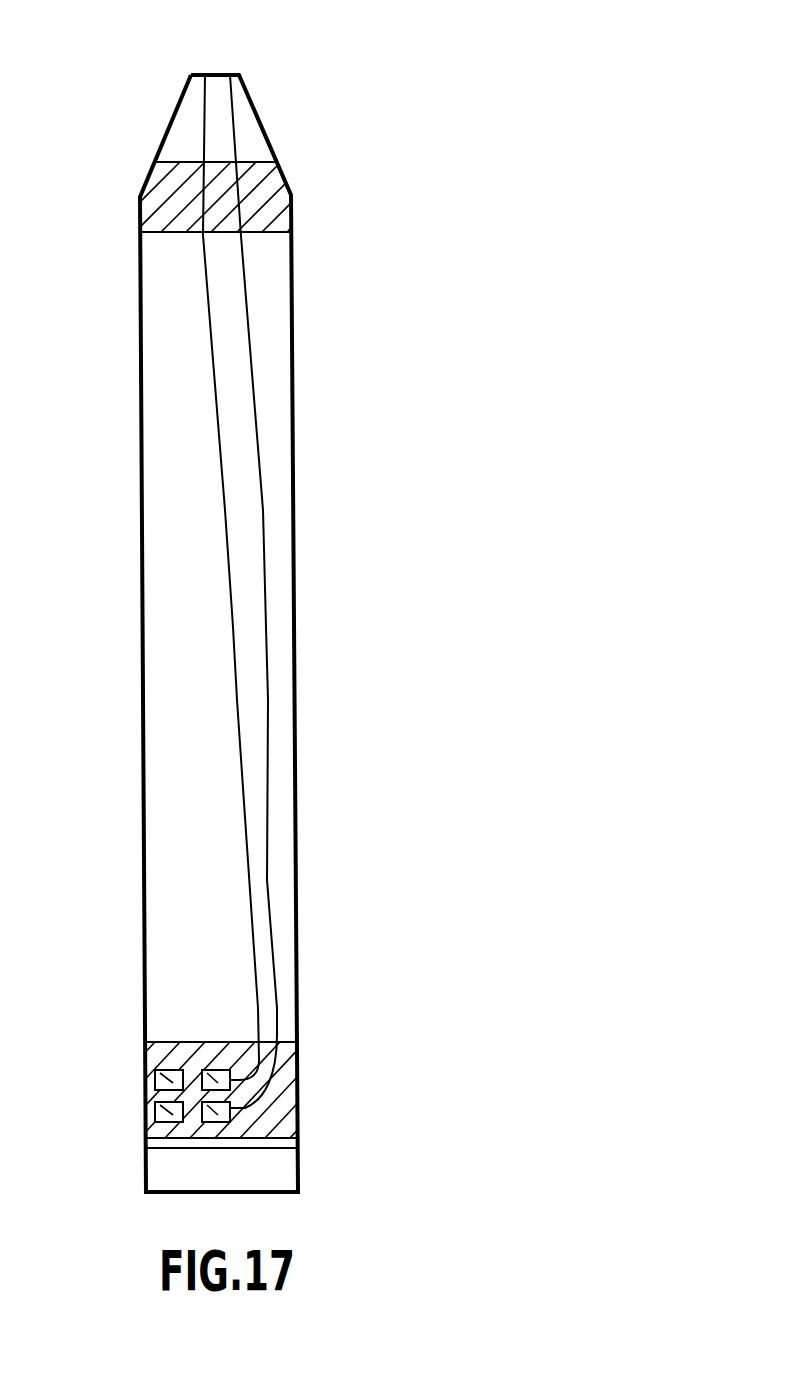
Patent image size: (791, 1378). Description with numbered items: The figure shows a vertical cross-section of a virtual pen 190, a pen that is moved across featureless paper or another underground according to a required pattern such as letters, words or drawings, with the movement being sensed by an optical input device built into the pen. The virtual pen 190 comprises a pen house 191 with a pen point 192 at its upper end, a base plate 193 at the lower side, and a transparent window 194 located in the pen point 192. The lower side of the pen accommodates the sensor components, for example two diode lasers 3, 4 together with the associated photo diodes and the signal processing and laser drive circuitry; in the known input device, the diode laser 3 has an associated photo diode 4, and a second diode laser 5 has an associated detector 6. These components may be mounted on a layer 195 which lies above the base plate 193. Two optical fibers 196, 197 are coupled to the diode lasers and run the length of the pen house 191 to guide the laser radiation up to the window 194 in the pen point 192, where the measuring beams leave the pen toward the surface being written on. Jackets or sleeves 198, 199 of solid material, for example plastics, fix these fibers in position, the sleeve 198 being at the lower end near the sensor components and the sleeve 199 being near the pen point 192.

The virtual pen 190 is at (431, 38).
The pen house 191 is at (295, 537).
The pen point 192 is at (262, 123).
The base plate 193 is at (278, 1167).
The transparent window 194 is at (217, 75).
The layer 195 is at (290, 1142).
The optical fiber 196 is at (232, 627).
The optical fiber 197 is at (267, 627).
The jacket or sleeve 198 is at (287, 1077).
The jacket or sleeve 199 is at (258, 211).
The diode laser 3 is at (217, 1080).
The photo diode 4 is at (175, 1080).
The diode laser 5 is at (212, 1113).
The detector 6 is at (172, 1113).